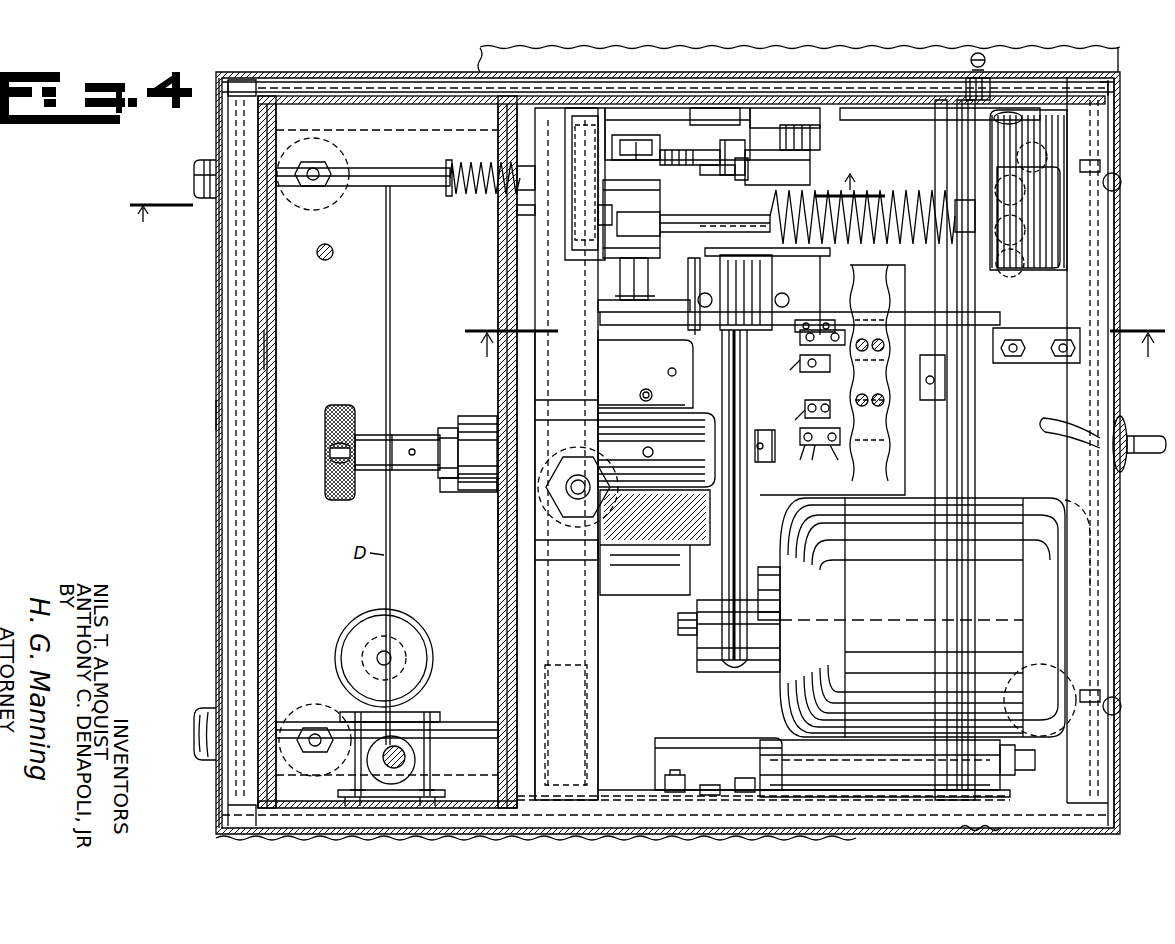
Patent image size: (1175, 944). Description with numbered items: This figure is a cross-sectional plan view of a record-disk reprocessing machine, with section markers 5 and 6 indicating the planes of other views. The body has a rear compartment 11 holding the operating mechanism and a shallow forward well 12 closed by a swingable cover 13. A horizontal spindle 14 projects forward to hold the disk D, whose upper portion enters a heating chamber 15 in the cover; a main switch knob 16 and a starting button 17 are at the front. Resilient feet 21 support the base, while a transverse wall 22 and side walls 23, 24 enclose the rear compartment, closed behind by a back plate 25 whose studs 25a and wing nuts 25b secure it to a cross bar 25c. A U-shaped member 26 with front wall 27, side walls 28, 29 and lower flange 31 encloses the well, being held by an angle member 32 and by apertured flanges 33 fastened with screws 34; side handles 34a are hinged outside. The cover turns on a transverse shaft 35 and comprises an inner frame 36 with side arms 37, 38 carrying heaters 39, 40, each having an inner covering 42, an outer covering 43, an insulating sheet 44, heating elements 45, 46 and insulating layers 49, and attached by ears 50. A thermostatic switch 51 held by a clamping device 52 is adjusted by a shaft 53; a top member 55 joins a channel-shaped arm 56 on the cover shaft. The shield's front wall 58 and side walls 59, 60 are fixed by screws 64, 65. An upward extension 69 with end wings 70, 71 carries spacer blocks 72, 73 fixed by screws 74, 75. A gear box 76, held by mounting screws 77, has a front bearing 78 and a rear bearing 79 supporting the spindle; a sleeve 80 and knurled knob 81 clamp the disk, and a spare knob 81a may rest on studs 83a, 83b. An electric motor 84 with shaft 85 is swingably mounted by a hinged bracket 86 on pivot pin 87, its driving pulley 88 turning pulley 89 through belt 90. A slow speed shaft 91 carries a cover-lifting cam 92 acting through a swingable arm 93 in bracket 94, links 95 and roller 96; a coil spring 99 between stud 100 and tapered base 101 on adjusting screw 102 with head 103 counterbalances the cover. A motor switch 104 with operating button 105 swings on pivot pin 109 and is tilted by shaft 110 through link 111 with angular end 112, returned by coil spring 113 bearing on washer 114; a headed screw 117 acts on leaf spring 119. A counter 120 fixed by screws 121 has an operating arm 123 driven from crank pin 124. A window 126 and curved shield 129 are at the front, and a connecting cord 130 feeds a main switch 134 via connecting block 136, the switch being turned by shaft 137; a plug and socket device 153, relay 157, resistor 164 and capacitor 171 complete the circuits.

The section line 5- 5 is at (815, 359).
The section line 6- 6 is at (507, 199).
The rear compartment 11 is at (836, 570).
The forward compartment 12 is at (226, 574).
The cover 13 is at (208, 481).
The spindle 14 is at (326, 468).
The heating chamber 15 is at (440, 552).
The main switch knob 16 is at (196, 736).
The starting button 17 is at (194, 178).
The resilient feet 21 is at (318, 208).
The transverse wall 22 is at (500, 130).
The side wall 23 is at (848, 104).
The side wall 24 is at (1110, 805).
The back plate 25 is at (1110, 535).
The threaded interior studs 25a is at (1116, 186).
The wing nuts 25b is at (1102, 165).
The cross bar 25c is at (1098, 514).
The U-shaped member 26 is at (221, 539).
The front wall 27 is at (244, 598).
The side wall 28 is at (368, 80).
The side wall 29 is at (224, 820).
The lower flange 31 is at (378, 128).
The transverse angle member 32 is at (538, 655).
The apertured flanges 33 is at (1122, 114).
The screws 34 is at (1120, 98).
The side handles 34a is at (480, 58).
The transverse shaft 35 is at (976, 420).
The inner frame 36 is at (322, 88).
The side arm 37 is at (384, 100).
The side arm 38 is at (448, 780).
The heater 39 is at (284, 351).
The heater 40 is at (491, 301).
The inner metal covering 42 is at (278, 322).
The outer metal covering 43 is at (258, 350).
The heat insulating sheet 44 is at (278, 368).
The heating element 45 is at (278, 296).
The heating element 46 is at (498, 312).
The layers of insulating material 49 is at (497, 525).
The ears 50 is at (292, 104).
The thermostatic switch 51 is at (404, 732).
The clamping device 52 is at (440, 732).
The rotatable shaft 53 is at (416, 752).
The top member 55 is at (898, 465).
The channel-shaped arm 56 is at (1000, 364).
The front wall 58 is at (216, 416).
The side wall 59 is at (262, 78).
The side wall 60 is at (224, 835).
The screws 64 is at (984, 58).
The screws 65 is at (962, 834).
The upward extension 69 is at (600, 610).
The end wing 70 is at (708, 112).
The end wing 71 is at (742, 778).
The fiber spacer block 72 is at (760, 110).
The fiber spacer block 73 is at (706, 788).
The countersunk screws 74 is at (686, 150).
The countersunk screws 75 is at (680, 776).
The gear box 76 is at (636, 566).
The mounting screws 77 is at (494, 414).
The front bearing 78 is at (452, 428).
The rear bearing 79 is at (692, 420).
The sleeve 80 is at (418, 438).
The knurled knob 81 is at (325, 420).
The spare knob 81a is at (356, 632).
The supporting stud 83a is at (376, 655).
The supporting stud 83b is at (350, 251).
The electric motor 84 is at (911, 617).
The motor shaft 85 is at (678, 626).
The hinged bracket 86 is at (985, 788).
The pivot pin 87 is at (1028, 768).
The driving pulley 88 is at (698, 652).
The pulley 89 is at (748, 496).
The belt 90 is at (722, 566).
The slow speed shaft 91 is at (636, 270).
The cover-lifting cam 92 is at (608, 301).
The swingable arm 93 is at (792, 322).
The bracket 94 is at (692, 262).
The pivoted links 95 is at (848, 278).
The roller 96 is at (722, 282).
The coil spring 99 is at (870, 196).
The stud 100 is at (950, 186).
The tapered base 101 is at (762, 232).
The adjusting screw 102 is at (498, 240).
The head 103 is at (498, 212).
The motor switch 104 is at (812, 182).
The operating button 105 is at (742, 166).
The transverse pivot pin 109 is at (806, 140).
The horizontal shaft 110 is at (406, 170).
The link 111 is at (573, 182).
The angular forward end 112 is at (566, 126).
The coil spring 113 is at (468, 164).
The washer 114 is at (452, 190).
The headed screw 117 is at (716, 176).
The leaf spring 119 is at (736, 154).
The counter 120 is at (604, 234).
The screws 121 is at (596, 212).
The operating arm 123 is at (672, 158).
The crank pin 124 is at (620, 114).
The window 126 is at (240, 448).
The curved upper shield 129 is at (458, 492).
The connecting cord 130 is at (1150, 434).
The main switch 134 is at (588, 695).
The connecting block 136 is at (1040, 364).
The shaft 137 is at (446, 720).
The plug and socket device 153 is at (1062, 255).
The two-arm relay 157 is at (810, 385).
The resistor 164 is at (927, 396).
The capacitor 171 is at (712, 738).